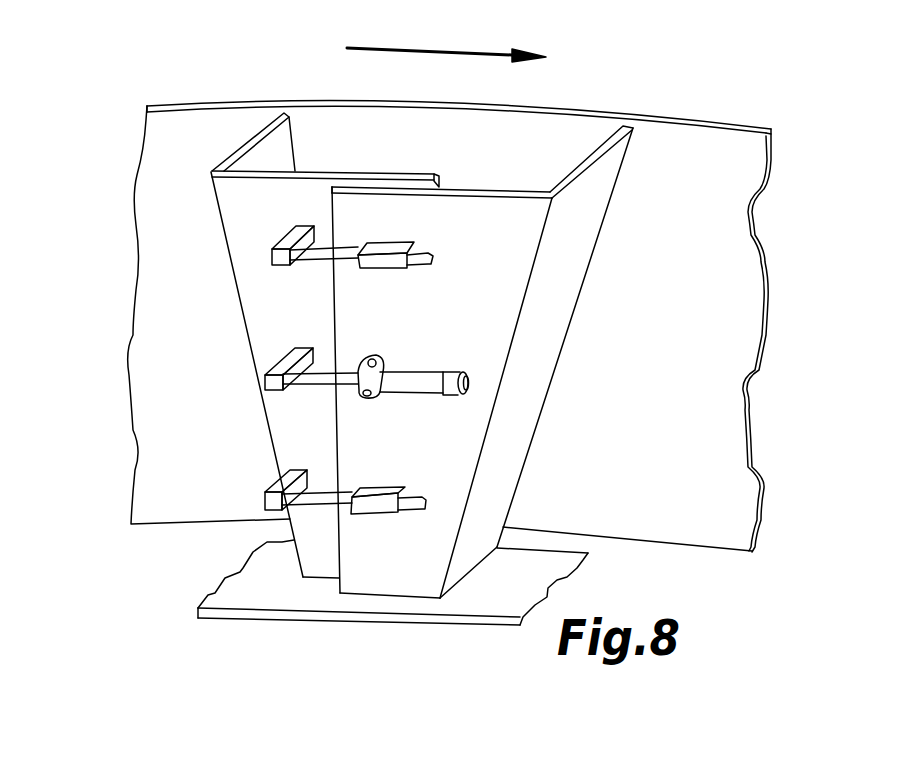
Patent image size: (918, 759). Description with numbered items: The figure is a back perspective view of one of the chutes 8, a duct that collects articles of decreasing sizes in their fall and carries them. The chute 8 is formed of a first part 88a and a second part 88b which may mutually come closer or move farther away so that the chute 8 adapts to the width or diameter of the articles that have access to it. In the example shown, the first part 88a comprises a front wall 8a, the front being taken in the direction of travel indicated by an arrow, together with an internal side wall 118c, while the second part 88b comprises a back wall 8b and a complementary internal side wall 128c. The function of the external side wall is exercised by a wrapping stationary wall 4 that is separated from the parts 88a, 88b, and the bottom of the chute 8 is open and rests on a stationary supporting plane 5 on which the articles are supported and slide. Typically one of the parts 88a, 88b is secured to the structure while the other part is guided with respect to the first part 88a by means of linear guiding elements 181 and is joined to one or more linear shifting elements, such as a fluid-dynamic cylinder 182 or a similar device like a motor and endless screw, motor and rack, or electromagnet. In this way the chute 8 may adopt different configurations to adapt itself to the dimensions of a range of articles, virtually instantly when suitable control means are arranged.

The wrapping stationary wall 4 is at (707, 140).
The stationary supporting plane 5 is at (545, 566).
The chute 8 is at (365, 355).
The front wall 8a is at (562, 298).
The back wall 8b is at (265, 150).
The first part 88a is at (583, 354).
The second part 88b is at (221, 310).
The internal side wall 118c is at (393, 562).
The internal side wall 128c is at (318, 556).
The linear guiding elements 181 is at (352, 215).
The fluid-dynamic cylinder 182 is at (407, 397).